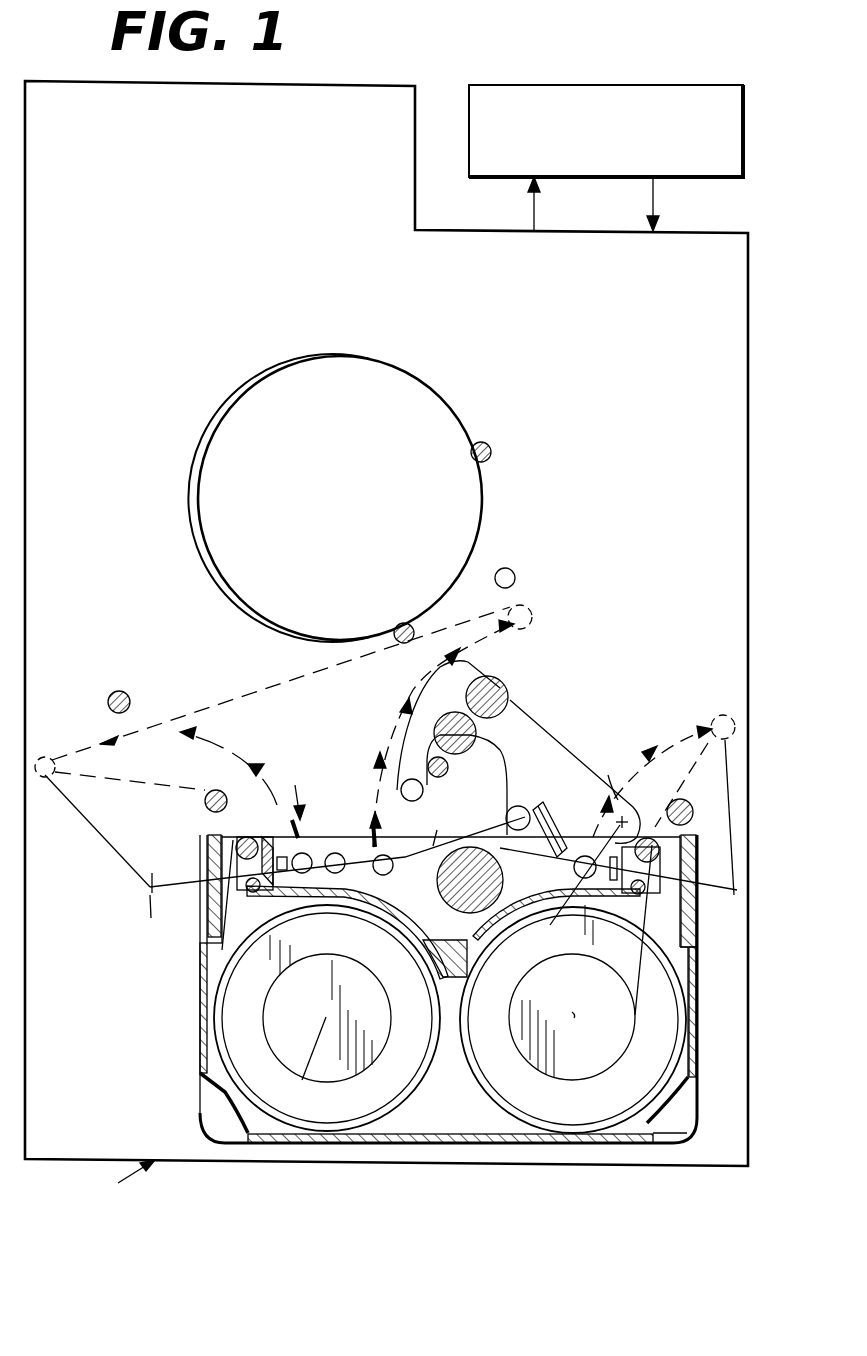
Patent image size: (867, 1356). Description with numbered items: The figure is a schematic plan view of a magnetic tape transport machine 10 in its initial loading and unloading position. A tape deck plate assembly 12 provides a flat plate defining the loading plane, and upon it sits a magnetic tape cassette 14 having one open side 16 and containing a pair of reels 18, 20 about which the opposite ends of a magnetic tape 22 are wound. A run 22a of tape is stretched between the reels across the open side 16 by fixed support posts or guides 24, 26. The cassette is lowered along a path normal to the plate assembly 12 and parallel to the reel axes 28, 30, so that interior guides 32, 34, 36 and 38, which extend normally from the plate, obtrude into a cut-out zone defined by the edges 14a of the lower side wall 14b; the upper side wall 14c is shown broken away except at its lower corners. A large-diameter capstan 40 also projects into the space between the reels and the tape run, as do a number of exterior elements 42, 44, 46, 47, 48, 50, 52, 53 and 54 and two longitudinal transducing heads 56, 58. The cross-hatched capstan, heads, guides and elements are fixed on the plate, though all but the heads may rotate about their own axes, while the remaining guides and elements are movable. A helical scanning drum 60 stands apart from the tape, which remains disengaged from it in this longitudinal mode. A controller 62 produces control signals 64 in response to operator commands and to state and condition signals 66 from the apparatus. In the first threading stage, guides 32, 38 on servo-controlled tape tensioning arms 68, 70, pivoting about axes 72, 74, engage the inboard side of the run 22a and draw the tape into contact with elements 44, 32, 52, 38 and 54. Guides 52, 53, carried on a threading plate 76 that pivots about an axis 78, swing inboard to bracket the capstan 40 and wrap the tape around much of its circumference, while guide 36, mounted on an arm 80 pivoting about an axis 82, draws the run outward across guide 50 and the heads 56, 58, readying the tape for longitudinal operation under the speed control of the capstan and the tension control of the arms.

The magnetic tape transport machine 10 is at (119, 1180).
The tape deck plate assembly 12 is at (104, 1005).
The magnetic tape cassette 14 is at (190, 1071).
The edges of lower side wall 14a is at (480, 936).
The lower side wall 14b is at (475, 1125).
The upper side wall 14c is at (675, 1118).
The open side 16 is at (333, 803).
The reel 18 is at (280, 1037).
The reel 20 is at (572, 1064).
The magnetic tape 22 is at (223, 956).
The run of tape 22a is at (315, 838).
The guide 24 is at (245, 837).
The guide 26 is at (650, 838).
The reel axis 28 is at (306, 1062).
The reel axis 30 is at (585, 1001).
The interior guide 32 is at (42, 790).
The interior guide 34 is at (335, 874).
The interior guide 36 is at (534, 629).
The interior guide 38 is at (712, 718).
The capstan 40 is at (462, 848).
The exterior element 42 is at (116, 690).
The exterior element 44 is at (213, 790).
The exterior element 46 is at (435, 617).
The exterior element 47 is at (493, 452).
The exterior element 48 is at (515, 575).
The exterior element 50 is at (446, 775).
The guide 52 is at (412, 801).
The guide 53 is at (520, 806).
The exterior element 54 is at (690, 816).
The longitudinal magnetic tape transducing head 56 is at (496, 683).
The longitudinal magnetic tape transducing head 58 is at (478, 735).
The helical scanning drum 60 is at (445, 398).
The controller 62 is at (640, 88).
The control signals 64 is at (660, 209).
The state and condition signals 66 is at (540, 214).
The tape tensioning arm 68 is at (150, 921).
The tape tensioning arm 70 is at (716, 886).
The pivot axis 72 is at (148, 890).
The pivot axis 74 is at (717, 830).
The threading plate 76 is at (566, 760).
The pivot axis 78 is at (613, 774).
The arm 80 is at (443, 825).
The pivot axis 82 is at (557, 812).